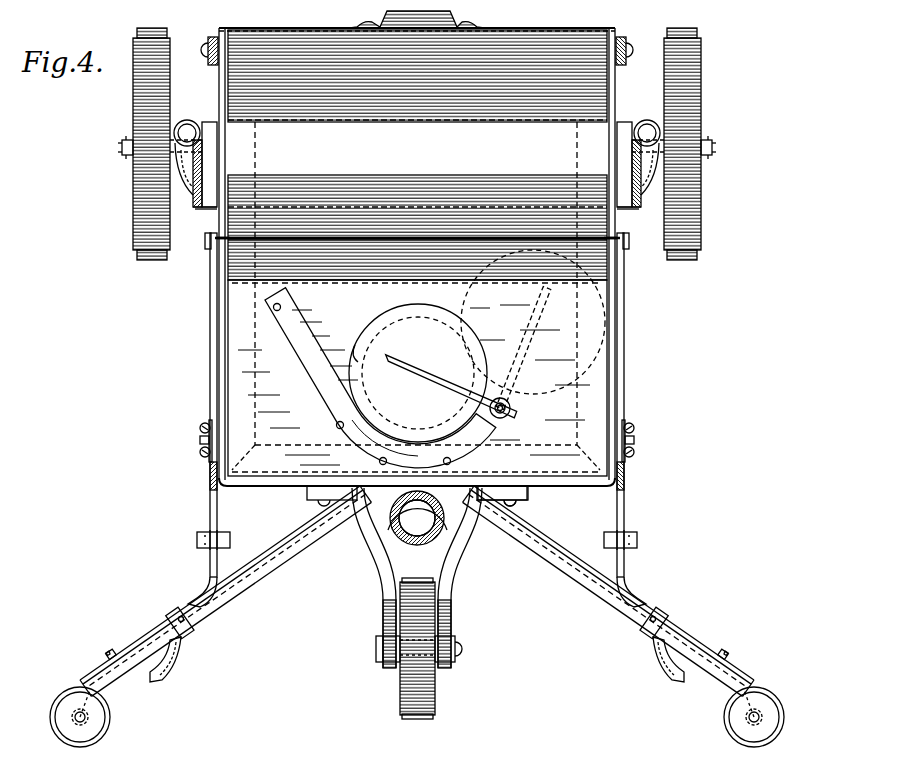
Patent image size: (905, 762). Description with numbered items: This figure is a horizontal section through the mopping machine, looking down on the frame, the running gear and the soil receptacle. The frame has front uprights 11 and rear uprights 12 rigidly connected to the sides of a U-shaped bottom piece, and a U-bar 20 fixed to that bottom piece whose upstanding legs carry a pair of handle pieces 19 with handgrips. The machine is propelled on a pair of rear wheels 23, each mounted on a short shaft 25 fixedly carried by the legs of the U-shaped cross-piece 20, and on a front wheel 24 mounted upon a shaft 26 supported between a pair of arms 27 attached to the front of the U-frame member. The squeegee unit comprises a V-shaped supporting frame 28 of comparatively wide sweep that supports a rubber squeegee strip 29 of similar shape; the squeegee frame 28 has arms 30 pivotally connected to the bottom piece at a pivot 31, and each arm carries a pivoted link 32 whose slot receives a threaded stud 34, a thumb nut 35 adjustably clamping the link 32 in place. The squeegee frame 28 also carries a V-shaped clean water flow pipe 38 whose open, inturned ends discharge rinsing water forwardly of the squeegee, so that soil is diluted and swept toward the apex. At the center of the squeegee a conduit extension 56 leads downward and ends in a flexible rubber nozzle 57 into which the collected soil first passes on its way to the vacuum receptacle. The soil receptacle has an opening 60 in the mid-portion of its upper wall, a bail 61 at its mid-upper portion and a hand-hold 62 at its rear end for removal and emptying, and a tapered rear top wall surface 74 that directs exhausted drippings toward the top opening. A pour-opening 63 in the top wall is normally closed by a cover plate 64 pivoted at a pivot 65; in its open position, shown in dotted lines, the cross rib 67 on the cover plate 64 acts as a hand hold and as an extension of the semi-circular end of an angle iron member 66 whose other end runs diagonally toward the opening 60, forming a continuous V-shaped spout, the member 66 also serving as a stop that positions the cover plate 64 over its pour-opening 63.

The front uprights 11 is at (208, 481).
The rear uprights 12 is at (206, 45).
The handle pieces 19 is at (187, 120).
The U-bar 20 is at (207, 210).
The rear wheels 23 is at (137, 106).
The front wheel 24 is at (434, 706).
The short shaft 25 is at (120, 150).
The shaft 26 is at (466, 648).
The arms 27 is at (368, 560).
The squeegee supporting frame 28 is at (152, 620).
The rubber squeegee strip 29 is at (112, 690).
The arms 30 is at (208, 385).
The pivot 31 is at (207, 245).
The pivoted link 32 is at (206, 425).
The threaded stud 34 is at (199, 452).
The thumb nut 35 is at (199, 432).
The clean water flow pipe 38 is at (257, 593).
The conduit extension 56 is at (415, 534).
The nozzle 57 is at (437, 533).
The opening 60 is at (410, 181).
The bail 61 is at (456, 240).
The hand-hold 62 is at (383, 16).
The pour-opening 63 is at (356, 352).
The cover plate 64 is at (402, 326).
The pivot 65 is at (512, 409).
The angle iron spout member 66 is at (303, 352).
The cross rib 67 is at (426, 380).
The tapered rear top wall surface 74 is at (318, 95).